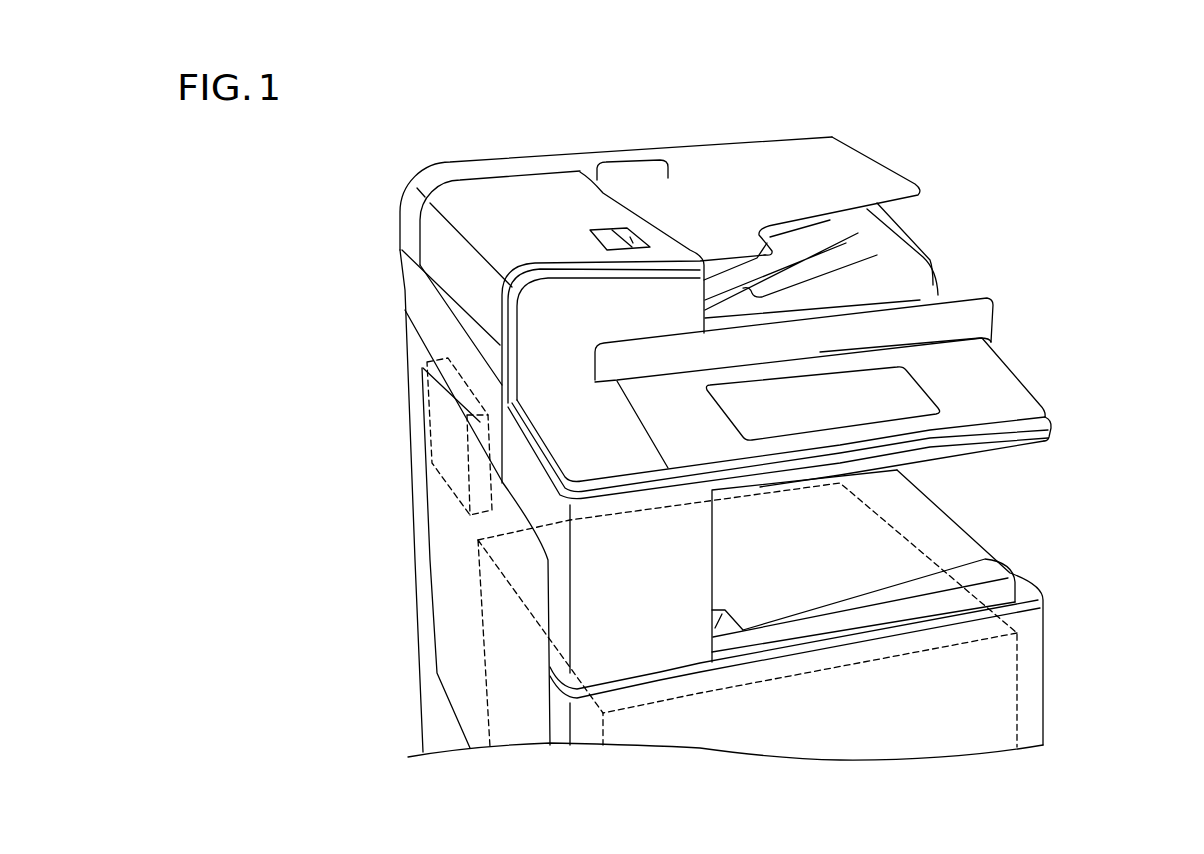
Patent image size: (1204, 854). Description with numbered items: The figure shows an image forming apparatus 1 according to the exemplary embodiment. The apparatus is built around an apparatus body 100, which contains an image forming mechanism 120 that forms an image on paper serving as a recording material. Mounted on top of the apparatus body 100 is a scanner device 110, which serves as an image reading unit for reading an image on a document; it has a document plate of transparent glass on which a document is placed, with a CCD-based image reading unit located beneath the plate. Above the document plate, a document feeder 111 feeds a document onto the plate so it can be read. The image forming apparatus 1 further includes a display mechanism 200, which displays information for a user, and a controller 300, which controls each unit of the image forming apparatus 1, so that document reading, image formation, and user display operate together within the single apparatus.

The image forming apparatus 1 is at (996, 154).
The apparatus body 100 is at (390, 513).
The scanner device 110 is at (592, 140).
The document feeder 111 is at (532, 190).
The image forming mechanism 120 is at (1020, 683).
The display mechanism 200 is at (801, 504).
The controller 300 is at (425, 413).